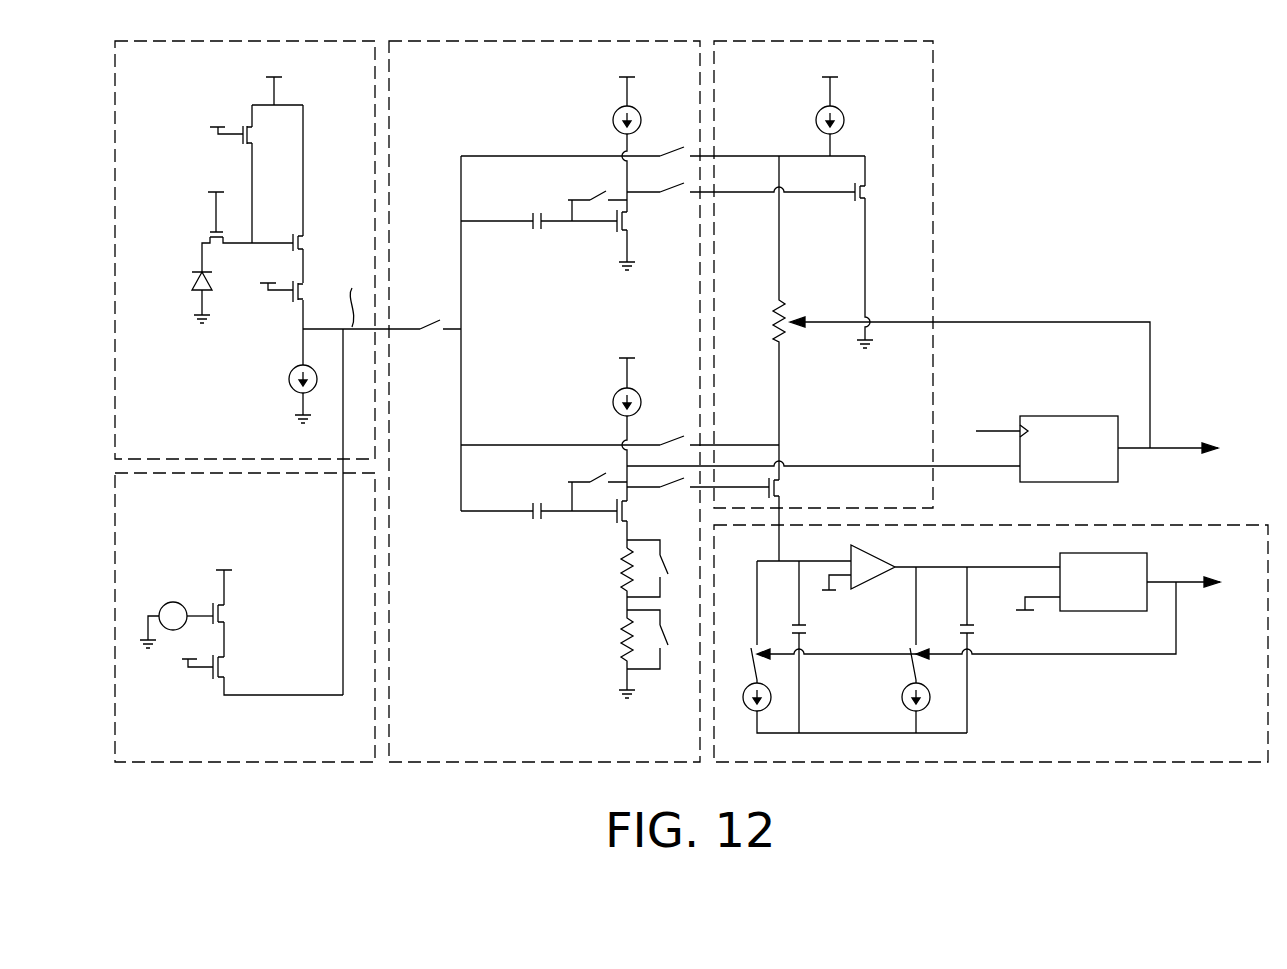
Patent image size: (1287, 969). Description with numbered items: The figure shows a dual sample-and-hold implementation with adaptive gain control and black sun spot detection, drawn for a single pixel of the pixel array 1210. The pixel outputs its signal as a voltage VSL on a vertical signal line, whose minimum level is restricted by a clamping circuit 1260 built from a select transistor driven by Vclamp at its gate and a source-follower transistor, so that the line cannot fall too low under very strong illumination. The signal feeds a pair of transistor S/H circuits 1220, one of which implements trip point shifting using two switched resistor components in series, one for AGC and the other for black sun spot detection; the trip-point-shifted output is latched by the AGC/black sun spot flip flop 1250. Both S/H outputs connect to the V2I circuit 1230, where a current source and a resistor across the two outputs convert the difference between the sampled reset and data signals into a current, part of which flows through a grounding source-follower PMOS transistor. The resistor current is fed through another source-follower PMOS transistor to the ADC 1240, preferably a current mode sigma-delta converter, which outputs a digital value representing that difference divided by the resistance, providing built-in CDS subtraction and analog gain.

The pixel array 1210 is at (199, 462).
The transistor S/H circuits 1220 is at (452, 763).
The V2I circuit 1230 is at (935, 83).
The ADC 1240 is at (1066, 763).
The AGC/black sun spot flip flop 1250 is at (1092, 416).
The clamping circuit 1260 is at (228, 763).